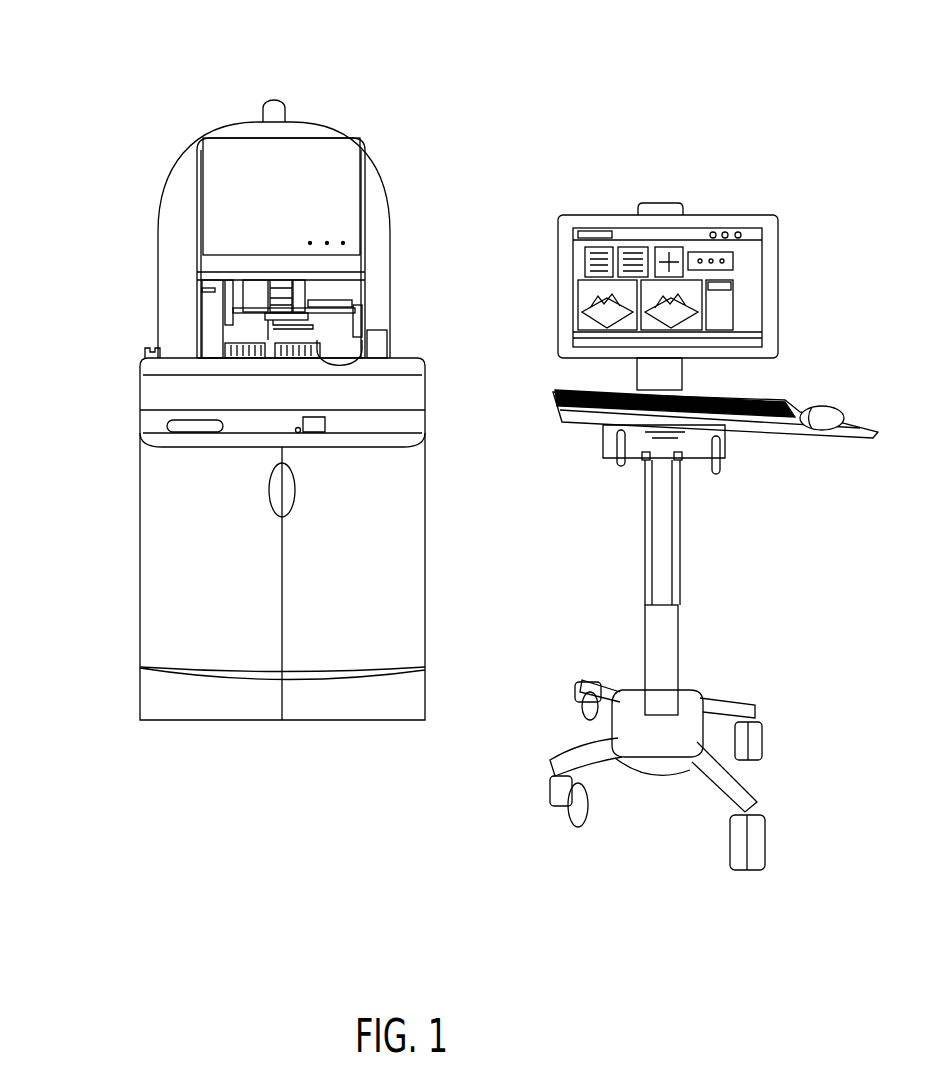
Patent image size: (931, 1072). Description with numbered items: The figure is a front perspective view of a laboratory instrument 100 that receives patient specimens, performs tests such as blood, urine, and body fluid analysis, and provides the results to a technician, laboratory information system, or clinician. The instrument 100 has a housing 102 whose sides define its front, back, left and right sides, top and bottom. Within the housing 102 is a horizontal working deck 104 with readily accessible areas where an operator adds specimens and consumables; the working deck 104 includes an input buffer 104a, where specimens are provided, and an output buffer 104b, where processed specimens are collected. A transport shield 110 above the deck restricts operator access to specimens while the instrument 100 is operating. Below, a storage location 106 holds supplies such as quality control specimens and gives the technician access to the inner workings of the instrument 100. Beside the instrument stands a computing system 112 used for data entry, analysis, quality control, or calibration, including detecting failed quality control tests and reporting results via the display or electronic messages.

The laboratory instrument 100 is at (450, 443).
The housing 102 is at (183, 158).
The horizontal working deck 104 is at (215, 322).
The input buffer 104a is at (388, 350).
The output buffer 104b is at (180, 352).
The storage location 106 is at (143, 645).
The transport shield 110 is at (322, 195).
The computing system 112 is at (703, 188).